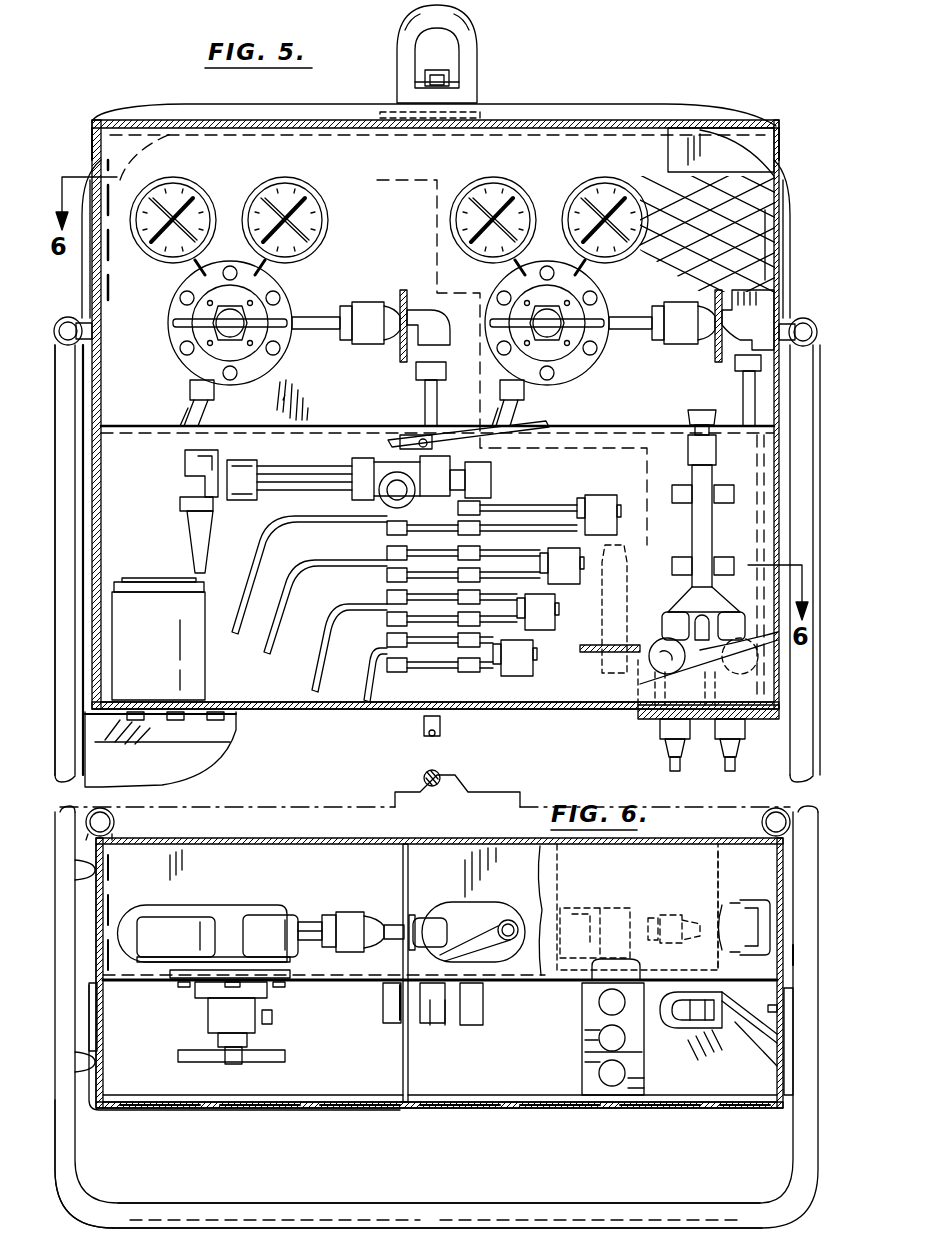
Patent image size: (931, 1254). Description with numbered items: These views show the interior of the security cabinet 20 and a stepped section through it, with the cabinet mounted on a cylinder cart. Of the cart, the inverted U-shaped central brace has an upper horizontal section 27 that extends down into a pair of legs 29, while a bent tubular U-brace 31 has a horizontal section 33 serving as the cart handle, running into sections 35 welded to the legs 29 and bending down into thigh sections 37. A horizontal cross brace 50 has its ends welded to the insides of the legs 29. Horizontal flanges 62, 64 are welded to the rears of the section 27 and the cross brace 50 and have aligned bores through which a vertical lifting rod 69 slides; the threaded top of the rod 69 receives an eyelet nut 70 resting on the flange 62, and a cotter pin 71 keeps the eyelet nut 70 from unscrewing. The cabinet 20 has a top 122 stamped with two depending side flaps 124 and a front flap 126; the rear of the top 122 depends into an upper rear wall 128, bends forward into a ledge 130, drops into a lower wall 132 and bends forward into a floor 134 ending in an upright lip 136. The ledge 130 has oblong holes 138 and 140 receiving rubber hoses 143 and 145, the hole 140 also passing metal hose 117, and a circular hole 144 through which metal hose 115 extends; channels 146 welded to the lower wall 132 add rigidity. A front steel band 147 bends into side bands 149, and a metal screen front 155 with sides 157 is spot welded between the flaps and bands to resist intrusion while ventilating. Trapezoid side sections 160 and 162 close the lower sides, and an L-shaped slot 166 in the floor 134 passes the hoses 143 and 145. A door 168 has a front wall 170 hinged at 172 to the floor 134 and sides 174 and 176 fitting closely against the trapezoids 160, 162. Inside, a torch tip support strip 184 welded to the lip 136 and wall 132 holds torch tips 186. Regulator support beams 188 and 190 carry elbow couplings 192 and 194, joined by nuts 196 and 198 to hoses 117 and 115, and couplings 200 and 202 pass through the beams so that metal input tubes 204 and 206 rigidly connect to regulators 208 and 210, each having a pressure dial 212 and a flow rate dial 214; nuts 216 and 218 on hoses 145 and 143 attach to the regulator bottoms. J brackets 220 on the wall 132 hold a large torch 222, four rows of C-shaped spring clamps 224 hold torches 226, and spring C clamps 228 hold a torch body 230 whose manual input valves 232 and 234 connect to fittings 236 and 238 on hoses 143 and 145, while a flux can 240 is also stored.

In FIG. 5, the cabinet 20 is at (781, 118).
In FIG. 6, the cabinet 20 is at (130, 1115).
In FIG. 5, the upper horizontal section 27 is at (636, 106).
In FIG. 5, the legs 29 is at (86, 270).
In FIG. 6, the legs 29 is at (115, 821).
In FIG. 5, the bent tubular U-brace 31 is at (48, 590).
In FIG. 6, the bent tubular U-brace 31 is at (78, 1214).
In FIG. 6, the horizontal section 33 is at (388, 1193).
In FIG. 5, the sections 35 is at (60, 325).
In FIG. 6, the sections 35 is at (56, 962).
In FIG. 5, the thigh sections 37 is at (56, 470).
In FIG. 5, the horizontal cross brace 50 is at (304, 806).
In FIG. 5, the horizontal flange 62 is at (480, 100).
In FIG. 5, the horizontal flange 64 is at (480, 800).
In FIG. 5, the vertical lifting rod 69 is at (420, 80).
In FIG. 5, the eyelet nut 70 is at (476, 35).
In FIG. 5, the cotter pin 71 is at (450, 80).
In FIG. 5, the flexible metal hose 115 is at (745, 400).
In FIG. 5, the flexible metal hose 117 is at (426, 398).
In FIG. 5, the top 122 is at (566, 116).
In FIG. 5, the side flaps 124 is at (95, 150).
In FIG. 5, the front flap 126 is at (732, 132).
In FIG. 5, the upper rear wall 128 is at (275, 142).
In FIG. 6, the upper rear wall 128 is at (316, 845).
In FIG. 5, the ledge 130 is at (310, 422).
In FIG. 6, the ledge 130 is at (281, 856).
In FIG. 5, the lower wall 132 is at (340, 710).
In FIG. 6, the lower wall 132 is at (560, 982).
In FIG. 5, the floor 134 is at (510, 710).
In FIG. 6, the floor 134 is at (200, 1110).
In FIG. 6, the upright lip 136 is at (298, 1100).
In FIG. 6, the oblong-shaped hole 138 is at (134, 906).
In FIG. 6, the oblong-shaped hole 140 is at (440, 910).
In FIG. 5, the rubber hose 143 is at (185, 415).
In FIG. 6, the circular hole 144 is at (742, 900).
In FIG. 5, the rubber hose 145 is at (498, 410).
In FIG. 6, the rubber hose 145 is at (500, 918).
In FIG. 6, the channels 146 is at (612, 957).
In FIG. 6, the front steel band 147 is at (299, 1110).
In FIG. 6, the side bands 149 is at (96, 974).
In FIG. 5, the screen front 155 is at (710, 235).
In FIG. 6, the screen front 155 is at (390, 1110).
In FIG. 5, the screen sides 157 is at (110, 258).
In FIG. 6, the screen sides 157 is at (99, 900).
In FIG. 5, the trapezoid side section 160 is at (105, 512).
In FIG. 6, the trapezoid side section 160 is at (784, 897).
In FIG. 5, the trapezoid side section 162 is at (790, 478).
In FIG. 6, the L-shaped slot 166 is at (742, 1037).
In FIG. 5, the cabinet door 168 is at (790, 698).
In FIG. 5, the front wall 170 is at (765, 657).
In FIG. 6, the front wall 170 is at (566, 1110).
In FIG. 5, the hinge 172 is at (230, 716).
In FIG. 6, the door side 174 is at (89, 1032).
In FIG. 5, the door side 176 is at (790, 522).
In FIG. 6, the door side 176 is at (796, 1037).
In FIG. 5, the torch tip support strip 184 is at (590, 656).
In FIG. 6, the torch tip support strip 184 is at (580, 1028).
In FIG. 5, the torch tips 186 is at (586, 596).
In FIG. 6, the torch tips 186 is at (500, 1117).
In FIG. 5, the regulator support beam 188 is at (403, 290).
In FIG. 6, the regulator support beam 188 is at (398, 1052).
In FIG. 5, the regulator support beam 190 is at (716, 355).
In FIG. 6, the regulator support beam 190 is at (700, 858).
In FIG. 5, the elbow coupling 192 is at (444, 338).
In FIG. 6, the elbow coupling 192 is at (497, 927).
In FIG. 5, the elbow coupling 194 is at (757, 335).
In FIG. 6, the elbow coupling 194 is at (765, 927).
In FIG. 5, the nut 196 is at (416, 372).
In FIG. 5, the nut 198 is at (738, 365).
In FIG. 5, the coupling 200 is at (366, 302).
In FIG. 6, the coupling 200 is at (360, 912).
In FIG. 5, the coupling 202 is at (690, 302).
In FIG. 6, the coupling 202 is at (682, 910).
In FIG. 5, the metal input tube 204 is at (312, 330).
In FIG. 6, the metal input tube 204 is at (320, 920).
In FIG. 5, the metal input tube 206 is at (638, 330).
In FIG. 5, the control valve regulator 208 is at (170, 352).
In FIG. 6, the control valve regulator 208 is at (190, 1022).
In FIG. 5, the control valve regulator 210 is at (580, 368).
In FIG. 6, the control valve regulator 210 is at (565, 910).
In FIG. 5, the pressure dial 212 is at (190, 200).
In FIG. 6, the pressure dial 212 is at (186, 915).
In FIG. 5, the flow rate dial 214 is at (303, 200).
In FIG. 6, the flow rate dial 214 is at (290, 913).
In FIG. 5, the nut 216 is at (212, 394).
In FIG. 5, the nut 218 is at (502, 392).
In FIG. 5, the J brackets 220 is at (488, 483).
In FIG. 6, the J brackets 220 is at (264, 1018).
In FIG. 5, the large torch 222 is at (352, 460).
In FIG. 5, the C-shaped spring clamps 224 is at (407, 532).
In FIG. 6, the C-shaped spring clamps 224 is at (380, 1022).
In FIG. 5, the torches 226 is at (306, 520).
In FIG. 5, the spring C clamps 228 is at (720, 575).
In FIG. 6, the spring C clamps 228 is at (676, 1034).
In FIG. 5, the torch body 230 is at (682, 612).
In FIG. 5, the manual input valve 232 is at (648, 668).
In FIG. 5, the manual input valve 234 is at (731, 622).
In FIG. 5, the fitting 236 is at (722, 765).
In FIG. 5, the fitting 238 is at (660, 738).
In FIG. 5, the flux can 240 is at (143, 605).